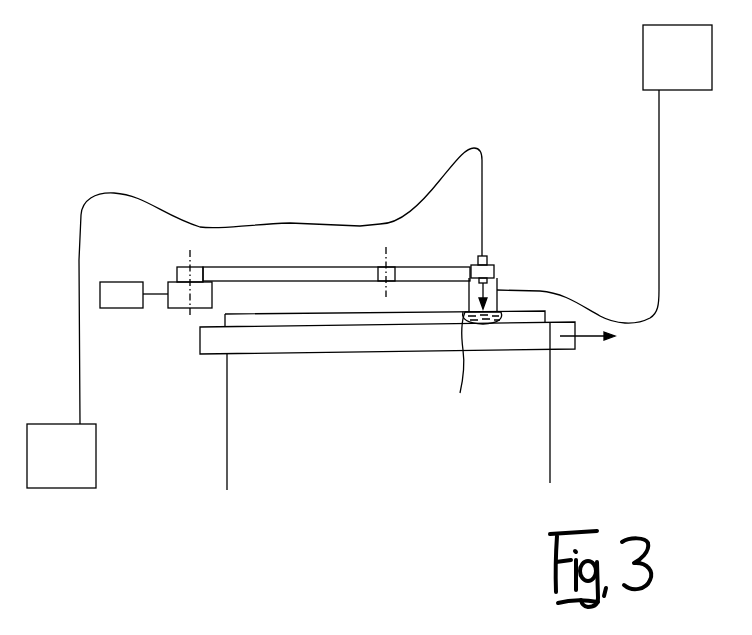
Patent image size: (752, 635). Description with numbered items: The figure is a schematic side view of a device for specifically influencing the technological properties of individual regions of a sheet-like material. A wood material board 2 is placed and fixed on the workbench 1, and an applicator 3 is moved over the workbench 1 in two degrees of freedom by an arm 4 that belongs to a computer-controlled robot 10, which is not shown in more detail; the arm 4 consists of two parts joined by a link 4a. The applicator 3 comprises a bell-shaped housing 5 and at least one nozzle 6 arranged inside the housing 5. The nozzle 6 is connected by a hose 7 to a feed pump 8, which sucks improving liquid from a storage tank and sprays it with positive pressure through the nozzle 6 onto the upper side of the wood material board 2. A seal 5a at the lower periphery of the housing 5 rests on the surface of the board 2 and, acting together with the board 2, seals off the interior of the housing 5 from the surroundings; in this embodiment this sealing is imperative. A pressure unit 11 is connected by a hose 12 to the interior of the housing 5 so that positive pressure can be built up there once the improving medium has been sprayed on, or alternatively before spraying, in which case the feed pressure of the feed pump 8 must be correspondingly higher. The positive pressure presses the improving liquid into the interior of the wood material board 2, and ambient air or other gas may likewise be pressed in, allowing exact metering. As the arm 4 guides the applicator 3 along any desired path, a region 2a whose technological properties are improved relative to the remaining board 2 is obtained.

The workbench 1 is at (353, 340).
The wood material board 2 is at (541, 313).
The region 2a is at (483, 320).
The applicator 3 is at (495, 270).
The arm 4 is at (308, 272).
The link 4a is at (385, 267).
The bell-shaped housing 5 is at (499, 284).
The seal 5a is at (500, 312).
The nozzle 6 is at (469, 288).
The hose 7 is at (253, 225).
The feed pump 8 is at (50, 475).
The computer-controlled robot 10 is at (118, 300).
The pressure unit 11 is at (687, 75).
The hose 12 is at (659, 222).